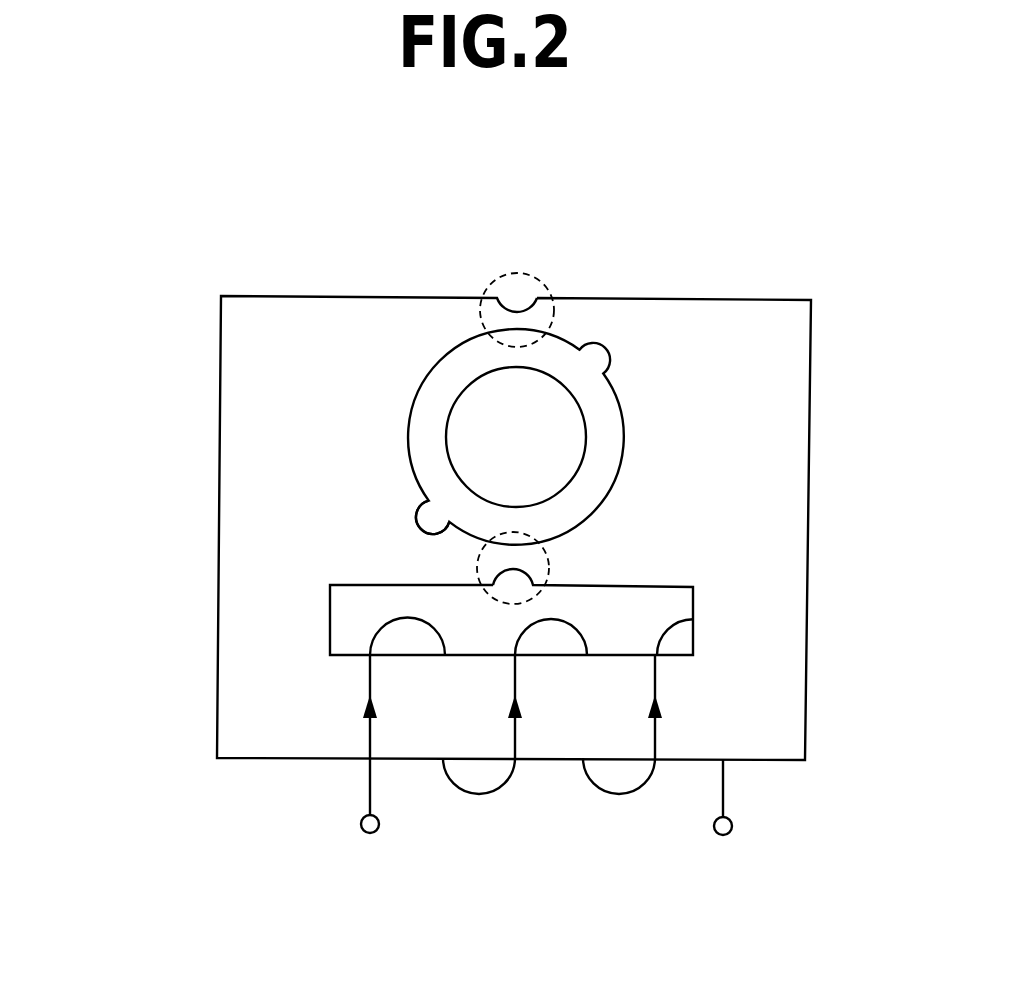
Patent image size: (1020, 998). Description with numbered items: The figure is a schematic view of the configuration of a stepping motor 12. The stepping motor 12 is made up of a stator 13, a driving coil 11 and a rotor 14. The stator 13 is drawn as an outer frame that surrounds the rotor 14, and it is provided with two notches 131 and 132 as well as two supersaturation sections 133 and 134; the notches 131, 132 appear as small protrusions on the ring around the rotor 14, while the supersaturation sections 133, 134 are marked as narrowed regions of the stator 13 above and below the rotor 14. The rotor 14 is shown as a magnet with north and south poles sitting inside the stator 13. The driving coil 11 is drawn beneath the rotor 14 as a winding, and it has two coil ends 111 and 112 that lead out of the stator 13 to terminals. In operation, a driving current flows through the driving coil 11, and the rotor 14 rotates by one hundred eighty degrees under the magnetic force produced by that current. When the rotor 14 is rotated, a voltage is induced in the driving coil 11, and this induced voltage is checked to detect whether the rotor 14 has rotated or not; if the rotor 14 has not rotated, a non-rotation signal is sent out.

The driving coil 11 is at (479, 795).
The coil end 111 is at (367, 787).
The coil end 112 is at (723, 791).
The stepping motor 12 is at (188, 549).
The stator 13 is at (770, 510).
The notch 131 is at (613, 352).
The notch 132 is at (424, 505).
The supersaturation section 133 is at (518, 273).
The supersaturation section 134 is at (479, 560).
The rotor 14 is at (455, 402).